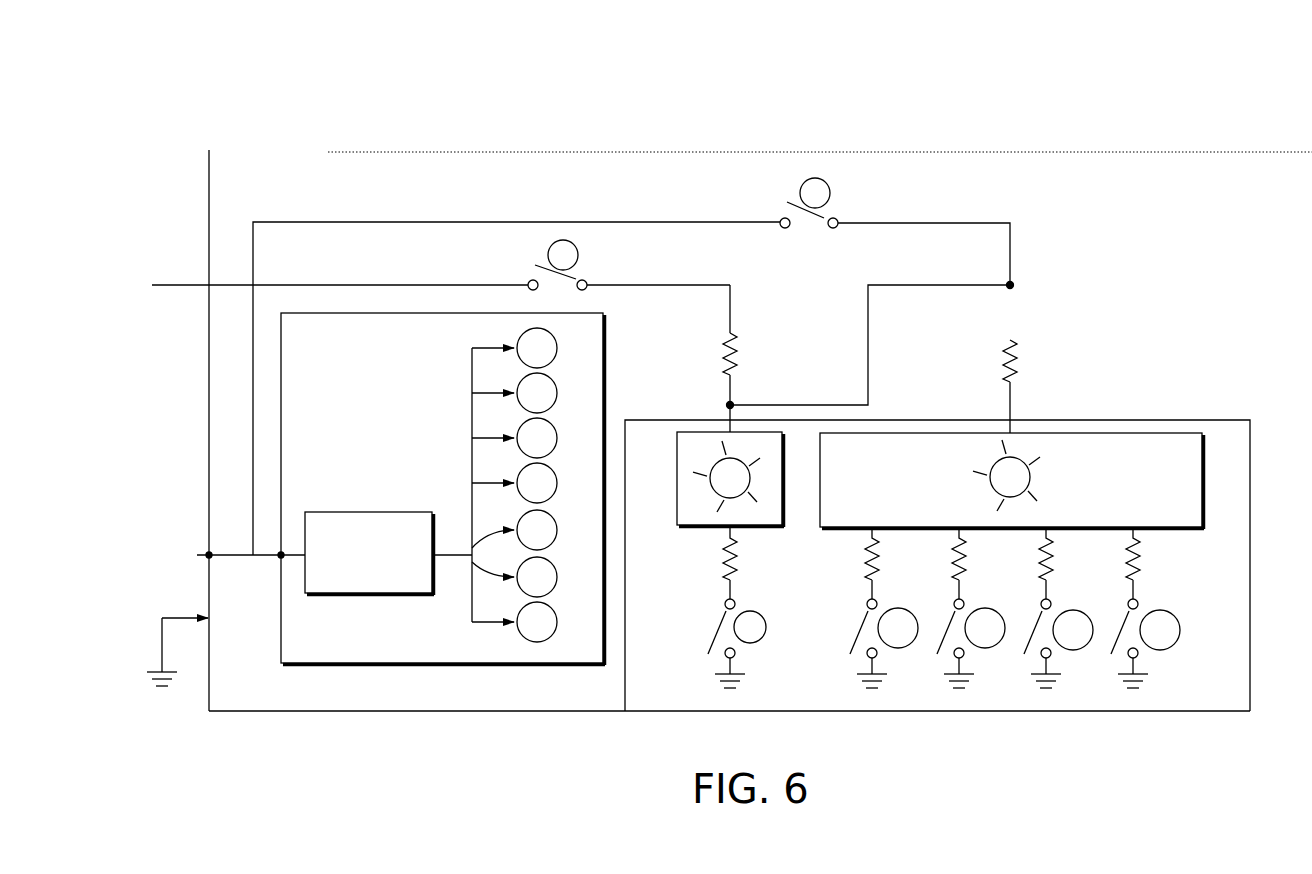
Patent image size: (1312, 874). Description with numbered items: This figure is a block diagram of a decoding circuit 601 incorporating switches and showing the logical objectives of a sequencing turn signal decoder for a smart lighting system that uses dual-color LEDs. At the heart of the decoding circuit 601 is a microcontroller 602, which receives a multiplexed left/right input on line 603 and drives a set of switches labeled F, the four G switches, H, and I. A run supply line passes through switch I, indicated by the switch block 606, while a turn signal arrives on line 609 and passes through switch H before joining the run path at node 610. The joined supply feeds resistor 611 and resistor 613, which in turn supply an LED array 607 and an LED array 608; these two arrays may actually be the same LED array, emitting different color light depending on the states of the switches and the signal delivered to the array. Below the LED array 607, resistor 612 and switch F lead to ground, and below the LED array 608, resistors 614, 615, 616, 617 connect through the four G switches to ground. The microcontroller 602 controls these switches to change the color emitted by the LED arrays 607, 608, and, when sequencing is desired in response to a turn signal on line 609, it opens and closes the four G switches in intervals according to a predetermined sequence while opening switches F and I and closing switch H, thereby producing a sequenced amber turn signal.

The decoding circuit 601 is at (207, 96).
The microcontroller 602 is at (391, 567).
The MUX left/right input line 603 is at (222, 558).
The ignition switch I 606 is at (390, 283).
The LED array 607 is at (757, 527).
The LED array 608 is at (830, 529).
The line 609 is at (486, 221).
The junction node 610 is at (969, 287).
The resistor 611 is at (719, 363).
The resistor 612 is at (721, 566).
The resistor 613 is at (1021, 357).
The resistor 614 is at (878, 560).
The resistor 615 is at (965, 560).
The resistor 616 is at (1053, 560).
The resistor 617 is at (1140, 560).